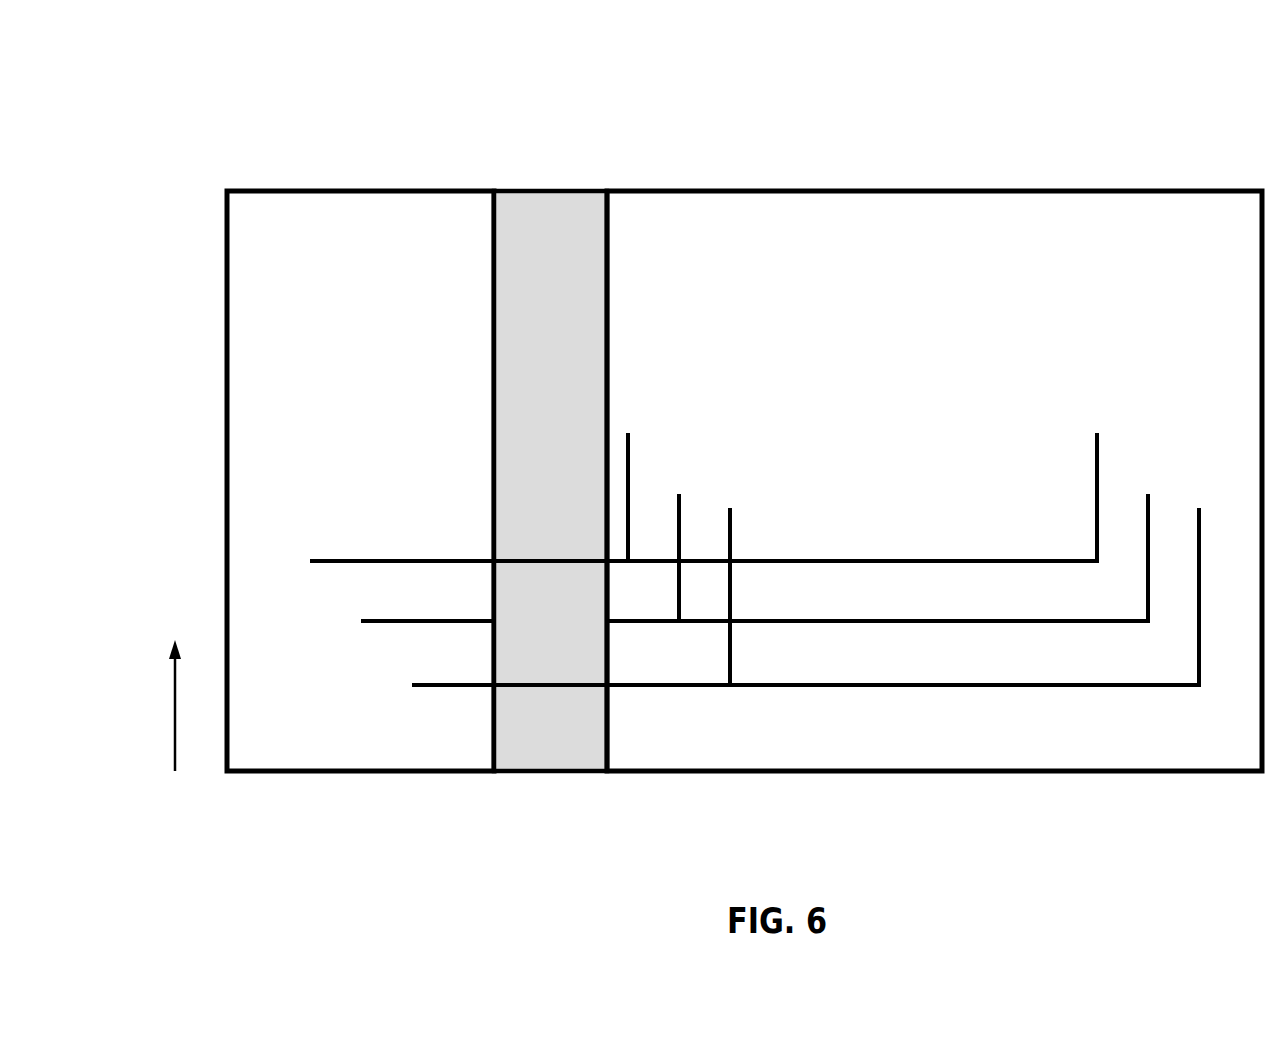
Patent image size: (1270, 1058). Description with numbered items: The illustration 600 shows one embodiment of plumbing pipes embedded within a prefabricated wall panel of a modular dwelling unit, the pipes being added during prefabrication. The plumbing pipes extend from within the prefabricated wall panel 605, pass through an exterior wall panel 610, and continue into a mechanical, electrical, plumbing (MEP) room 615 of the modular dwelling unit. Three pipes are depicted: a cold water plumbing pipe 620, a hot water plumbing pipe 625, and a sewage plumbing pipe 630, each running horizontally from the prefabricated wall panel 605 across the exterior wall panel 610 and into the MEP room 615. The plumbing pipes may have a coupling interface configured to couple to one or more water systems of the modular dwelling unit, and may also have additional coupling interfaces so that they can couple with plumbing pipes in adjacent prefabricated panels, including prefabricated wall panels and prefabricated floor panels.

The illustration 600 is at (200, 42).
The prefabricated wall panel 605 is at (850, 160).
The exterior wall panel 610 is at (528, 160).
The mechanical, electrical, plumbing (MEP) room 615 is at (266, 160).
The cold water plumbing pipe 620 is at (362, 562).
The hot water plumbing pipe 625 is at (397, 622).
The sewage plumbing pipe 630 is at (446, 686).